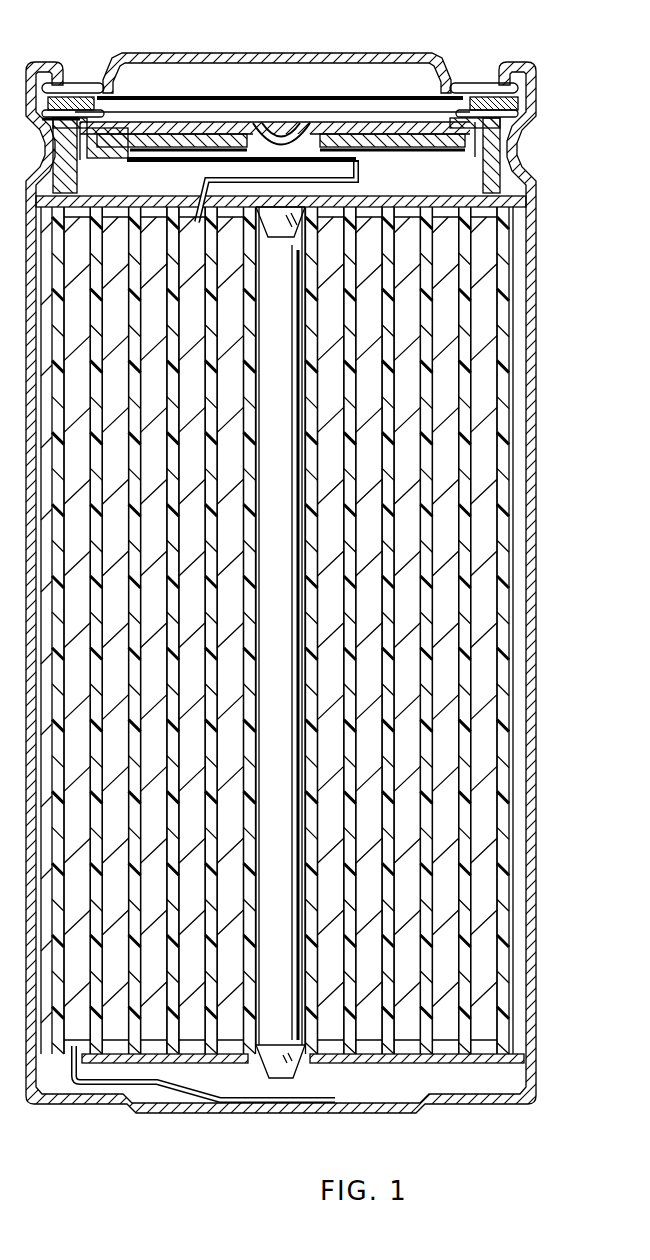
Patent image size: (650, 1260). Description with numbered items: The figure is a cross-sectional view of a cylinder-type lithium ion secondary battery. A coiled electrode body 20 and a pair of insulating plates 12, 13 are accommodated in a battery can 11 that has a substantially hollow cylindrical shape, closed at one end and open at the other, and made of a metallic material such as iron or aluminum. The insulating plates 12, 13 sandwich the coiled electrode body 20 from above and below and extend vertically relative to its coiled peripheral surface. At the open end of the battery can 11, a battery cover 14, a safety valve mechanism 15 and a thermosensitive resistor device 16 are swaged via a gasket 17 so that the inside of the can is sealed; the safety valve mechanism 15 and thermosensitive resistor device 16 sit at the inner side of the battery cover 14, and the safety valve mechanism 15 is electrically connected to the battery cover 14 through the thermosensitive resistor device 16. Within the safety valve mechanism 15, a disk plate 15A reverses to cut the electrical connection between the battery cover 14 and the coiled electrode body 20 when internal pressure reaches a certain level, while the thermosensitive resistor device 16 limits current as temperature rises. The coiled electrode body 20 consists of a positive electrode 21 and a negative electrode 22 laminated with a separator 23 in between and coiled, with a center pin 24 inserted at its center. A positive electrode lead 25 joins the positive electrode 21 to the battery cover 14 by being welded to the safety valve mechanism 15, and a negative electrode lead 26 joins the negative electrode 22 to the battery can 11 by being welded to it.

The battery can 11 is at (537, 265).
The insulating plate 12 is at (522, 203).
The insulating plate 13 is at (506, 1059).
The battery cover 14 is at (250, 53).
The safety valve mechanism 15 is at (287, 82).
The disk plate 15A is at (407, 118).
The thermosensitive resistor device 16 is at (513, 104).
The gasket 17 is at (497, 158).
The coiled electrode body 20 is at (322, 630).
The positive electrode 21 is at (447, 466).
The negative electrode 22 is at (485, 524).
The separator 23 is at (468, 595).
The center pin 24 is at (272, 688).
The positive electrode lead 25 is at (262, 158).
The negative electrode lead 26 is at (170, 1084).